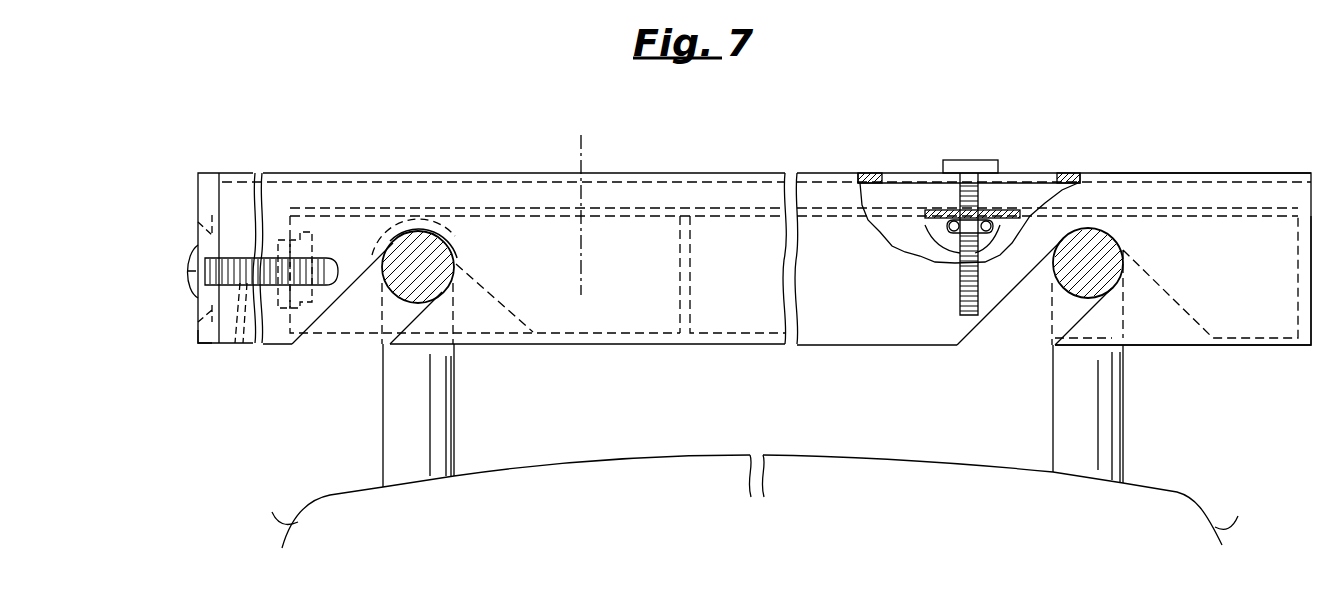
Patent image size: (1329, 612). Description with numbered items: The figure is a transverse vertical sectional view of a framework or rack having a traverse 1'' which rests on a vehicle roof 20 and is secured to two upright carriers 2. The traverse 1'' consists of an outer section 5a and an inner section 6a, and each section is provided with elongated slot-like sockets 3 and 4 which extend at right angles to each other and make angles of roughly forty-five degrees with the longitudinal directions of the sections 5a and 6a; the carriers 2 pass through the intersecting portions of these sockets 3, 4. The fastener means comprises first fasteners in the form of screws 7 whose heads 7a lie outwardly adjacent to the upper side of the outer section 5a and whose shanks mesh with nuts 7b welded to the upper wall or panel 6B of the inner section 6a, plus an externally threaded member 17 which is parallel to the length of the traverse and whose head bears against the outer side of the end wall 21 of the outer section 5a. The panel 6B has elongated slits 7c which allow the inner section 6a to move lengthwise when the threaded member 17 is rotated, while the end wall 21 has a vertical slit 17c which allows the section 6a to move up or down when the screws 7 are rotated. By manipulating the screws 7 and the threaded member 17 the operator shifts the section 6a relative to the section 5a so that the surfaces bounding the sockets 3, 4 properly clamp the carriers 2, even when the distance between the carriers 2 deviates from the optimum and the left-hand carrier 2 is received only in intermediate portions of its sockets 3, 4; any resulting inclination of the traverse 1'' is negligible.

The traverse 1'' is at (766, 285).
The carrier 2 is at (424, 280).
The socket 3 is at (331, 304).
The socket 4 is at (386, 234).
The outer section 5a is at (1138, 172).
The inner section 6a is at (1220, 212).
The upper wall or panel 6B is at (997, 211).
The screw 7 is at (958, 198).
The head 7a is at (976, 160).
The nut 7b is at (281, 346).
The slit 7c is at (902, 175).
The externally threaded member 17 is at (236, 346).
The vertical slit or aperture 17c is at (196, 320).
The roof 20 is at (1236, 491).
The end wall 21 is at (206, 349).